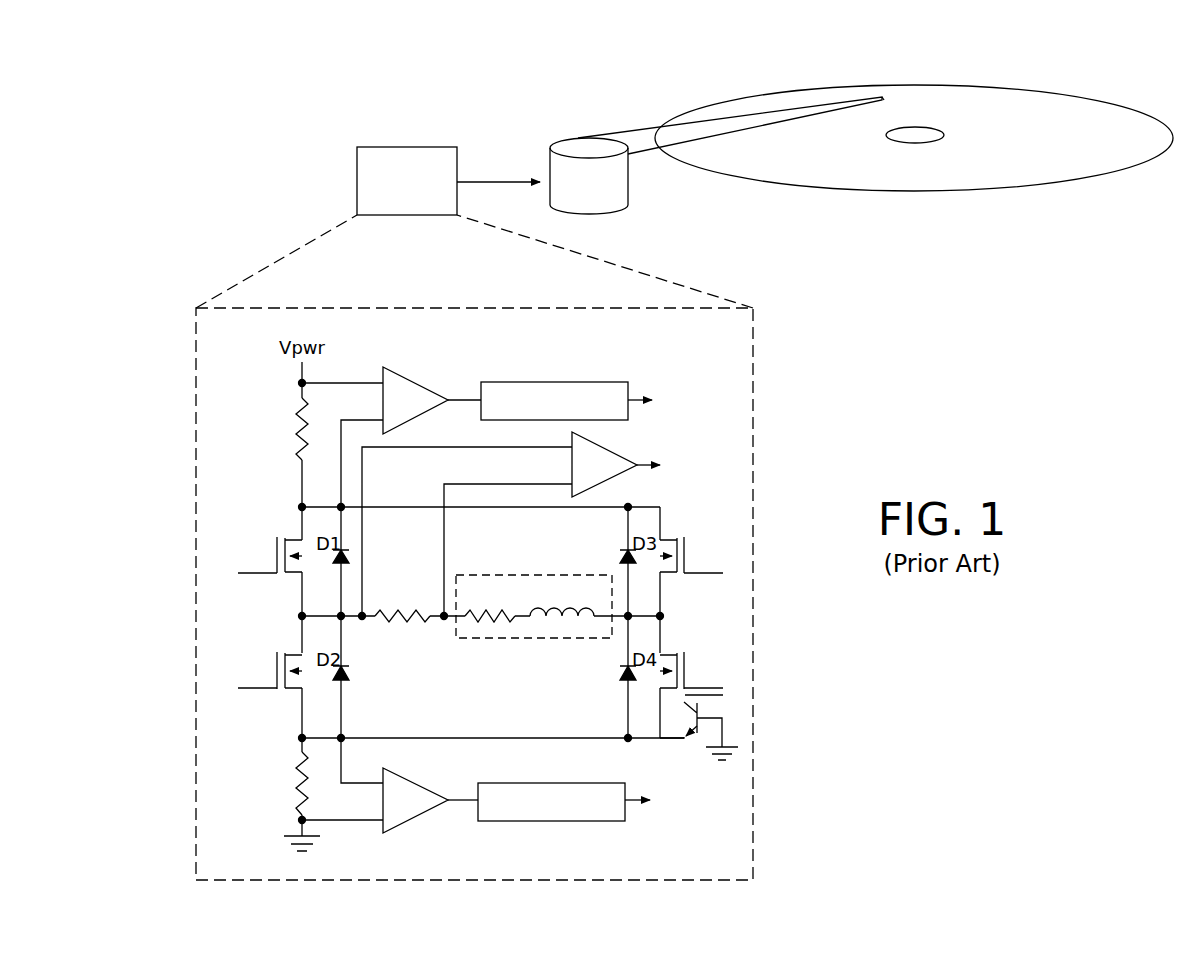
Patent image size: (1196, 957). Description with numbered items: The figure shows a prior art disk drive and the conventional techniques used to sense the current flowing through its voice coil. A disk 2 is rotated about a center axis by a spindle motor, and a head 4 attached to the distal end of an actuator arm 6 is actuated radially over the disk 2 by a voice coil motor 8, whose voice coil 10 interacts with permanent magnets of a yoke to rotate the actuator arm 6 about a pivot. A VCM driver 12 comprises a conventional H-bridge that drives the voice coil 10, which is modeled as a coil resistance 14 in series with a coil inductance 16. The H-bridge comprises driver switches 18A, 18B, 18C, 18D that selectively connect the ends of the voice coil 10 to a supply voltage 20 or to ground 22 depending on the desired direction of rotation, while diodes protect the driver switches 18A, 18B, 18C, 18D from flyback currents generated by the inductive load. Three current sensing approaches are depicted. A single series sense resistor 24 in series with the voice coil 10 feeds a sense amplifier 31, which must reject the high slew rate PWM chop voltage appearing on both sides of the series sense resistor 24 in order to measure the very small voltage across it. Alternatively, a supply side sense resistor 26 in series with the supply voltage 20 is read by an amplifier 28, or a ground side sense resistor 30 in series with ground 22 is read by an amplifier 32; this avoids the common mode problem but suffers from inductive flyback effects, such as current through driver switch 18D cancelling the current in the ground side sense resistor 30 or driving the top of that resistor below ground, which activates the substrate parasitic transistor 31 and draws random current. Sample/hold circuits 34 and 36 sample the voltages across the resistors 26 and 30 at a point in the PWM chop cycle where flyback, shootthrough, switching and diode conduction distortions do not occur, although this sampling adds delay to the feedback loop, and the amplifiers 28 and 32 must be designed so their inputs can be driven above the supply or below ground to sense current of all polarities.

The disk 2 is at (1135, 107).
The head 4 is at (882, 90).
The actuator arm 6 is at (633, 130).
The voice coil motor 8 is at (585, 135).
The voice coil 10 is at (533, 607).
The VCM driver 12 is at (404, 146).
The resistance Rvcm 14 is at (490, 629).
The inductance Lvcm 16 is at (559, 629).
The driver switch 18A is at (265, 553).
The driver switch 18B is at (265, 668).
The driver switch 18C is at (697, 553).
The driver switch 18D is at (697, 668).
The supply voltage 20 is at (300, 383).
The ground 22 is at (298, 821).
The sense resistor Rsense 24 is at (397, 630).
The sense resistor Rsensep 26 is at (292, 424).
The amplifier 28 is at (412, 386).
The sense resistor Rsensem 30 is at (292, 767).
The sense amplifier / parasitic transistor 31 is at (611, 480).
The amplifier 32 is at (408, 784).
The sample/hold circuit 34 is at (556, 380).
The sample/hold circuit 36 is at (551, 822).